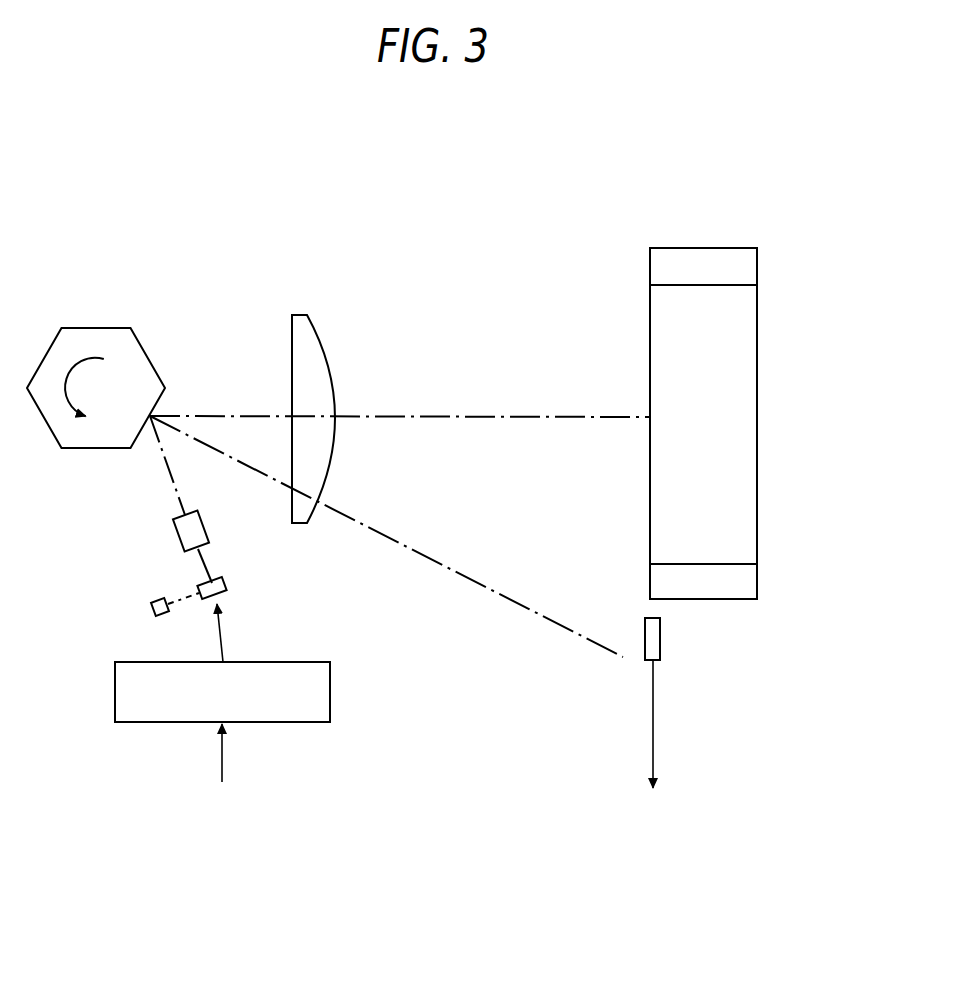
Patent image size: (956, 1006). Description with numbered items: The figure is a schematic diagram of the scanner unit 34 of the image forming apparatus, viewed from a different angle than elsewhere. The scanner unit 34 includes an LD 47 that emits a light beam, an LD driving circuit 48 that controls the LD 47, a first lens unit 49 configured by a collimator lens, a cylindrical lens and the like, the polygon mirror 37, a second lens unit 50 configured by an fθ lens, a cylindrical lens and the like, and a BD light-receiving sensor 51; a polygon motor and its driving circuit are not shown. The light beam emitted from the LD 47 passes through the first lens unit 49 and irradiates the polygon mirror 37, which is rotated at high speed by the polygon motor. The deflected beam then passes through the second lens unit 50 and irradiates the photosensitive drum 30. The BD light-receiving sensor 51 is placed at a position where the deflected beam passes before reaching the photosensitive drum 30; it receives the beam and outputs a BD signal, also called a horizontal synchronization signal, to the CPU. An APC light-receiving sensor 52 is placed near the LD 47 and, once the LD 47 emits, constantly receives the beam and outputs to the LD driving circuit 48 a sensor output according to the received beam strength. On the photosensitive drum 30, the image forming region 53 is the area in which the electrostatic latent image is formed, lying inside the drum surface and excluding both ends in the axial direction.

The photosensitive drum 30 is at (703, 258).
The scanner unit 34 is at (322, 224).
The polygon mirror 37 is at (95, 338).
The LD 47 is at (226, 583).
The LD driving circuit 48 is at (330, 692).
The first lens unit 49 is at (190, 532).
The second lens unit 50 is at (304, 318).
The BD light-receiving sensor 51 is at (661, 638).
The APC light-receiving sensor 52 is at (152, 609).
The image forming region 53 is at (740, 457).